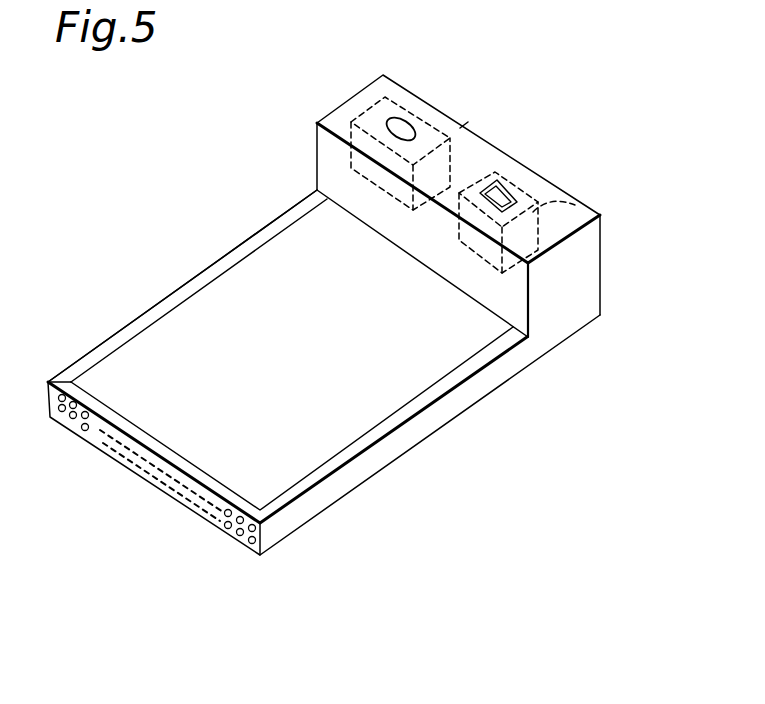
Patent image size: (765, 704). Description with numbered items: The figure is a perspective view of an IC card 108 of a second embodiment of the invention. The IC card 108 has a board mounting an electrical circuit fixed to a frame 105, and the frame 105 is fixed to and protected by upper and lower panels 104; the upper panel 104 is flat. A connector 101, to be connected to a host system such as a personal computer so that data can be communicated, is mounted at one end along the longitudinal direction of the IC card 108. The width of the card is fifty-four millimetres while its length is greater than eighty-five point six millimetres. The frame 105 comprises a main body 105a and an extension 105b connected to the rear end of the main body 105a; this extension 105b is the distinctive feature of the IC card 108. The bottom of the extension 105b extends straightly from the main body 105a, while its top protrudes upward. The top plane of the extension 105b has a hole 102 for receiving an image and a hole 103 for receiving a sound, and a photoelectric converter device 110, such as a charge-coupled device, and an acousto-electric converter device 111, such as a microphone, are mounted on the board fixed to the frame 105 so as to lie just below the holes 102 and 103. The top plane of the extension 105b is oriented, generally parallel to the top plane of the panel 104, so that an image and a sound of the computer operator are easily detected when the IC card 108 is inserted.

The connector 101 is at (237, 538).
The hole for receiving an image 102 is at (400, 128).
The hole for receiving a sound 103 is at (500, 193).
The panel 104 is at (423, 353).
The frame 105 is at (355, 316).
The main body 105a is at (332, 488).
The extension 105b is at (545, 317).
The IC card 108 is at (243, 213).
The photoelectric converter device 110 is at (482, 112).
The acousto-electric converter device 111 is at (567, 203).